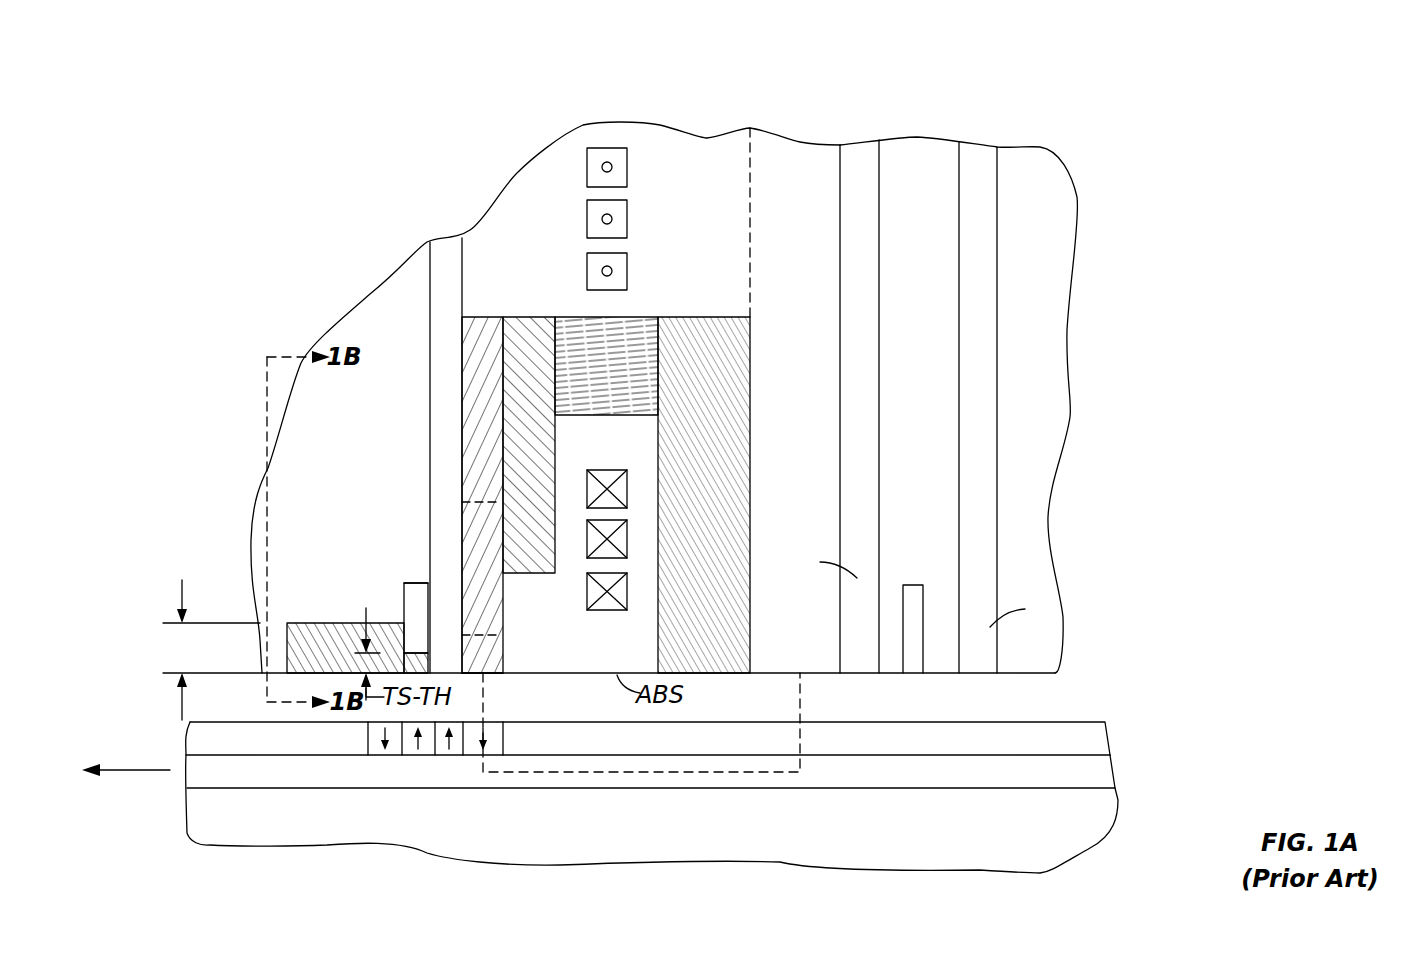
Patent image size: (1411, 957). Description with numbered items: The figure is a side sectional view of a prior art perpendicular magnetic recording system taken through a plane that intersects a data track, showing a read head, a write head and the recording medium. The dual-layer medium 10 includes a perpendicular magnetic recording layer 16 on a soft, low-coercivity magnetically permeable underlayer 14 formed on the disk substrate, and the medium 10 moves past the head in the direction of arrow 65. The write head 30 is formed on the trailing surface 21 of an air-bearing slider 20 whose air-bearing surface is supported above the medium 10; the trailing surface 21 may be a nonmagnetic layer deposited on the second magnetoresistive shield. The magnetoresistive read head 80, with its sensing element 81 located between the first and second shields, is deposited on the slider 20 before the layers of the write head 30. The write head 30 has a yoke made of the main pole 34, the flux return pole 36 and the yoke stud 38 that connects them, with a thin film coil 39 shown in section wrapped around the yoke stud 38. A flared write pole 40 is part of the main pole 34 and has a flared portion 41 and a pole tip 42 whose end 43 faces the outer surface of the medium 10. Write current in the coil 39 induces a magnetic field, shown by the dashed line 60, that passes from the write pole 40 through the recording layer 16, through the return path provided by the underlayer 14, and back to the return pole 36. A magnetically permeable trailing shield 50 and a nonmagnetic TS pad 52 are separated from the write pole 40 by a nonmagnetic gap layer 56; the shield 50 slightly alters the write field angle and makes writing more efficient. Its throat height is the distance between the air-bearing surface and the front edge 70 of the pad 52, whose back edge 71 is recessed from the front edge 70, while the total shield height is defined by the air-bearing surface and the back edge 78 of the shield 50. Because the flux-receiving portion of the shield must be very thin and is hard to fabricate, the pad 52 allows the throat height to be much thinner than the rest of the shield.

The dual-layer medium 10 is at (1100, 853).
The soft underlayer 14 is at (1100, 773).
The recording layer 16 is at (1095, 738).
The air-bearing slider 20 is at (1055, 408).
The trailing surface 21 is at (750, 242).
The write head 30 is at (802, 122).
The main pole 34 is at (540, 455).
The flux return pole 36 is at (735, 460).
The yoke stud 38 is at (652, 317).
The thin film coil 39 is at (642, 148).
The flared write pole 40 is at (497, 317).
The flared portion 41 is at (493, 617).
The pole tip 42 is at (490, 660).
The end of pole tip 43 is at (490, 675).
The trailing shield 50 is at (300, 635).
The TS pad 52 is at (410, 598).
The nonmagnetic gap layer 56 is at (440, 320).
The magnetic field 60 is at (801, 712).
The arrow 65 is at (125, 770).
The front edge of TS pad 70 is at (418, 653).
The back edge of TS pad 71 is at (420, 583).
The back edge of trailing shield 78 is at (337, 623).
The magnetoresistive read head 80 is at (838, 123).
The MR sensing element 81 is at (915, 667).